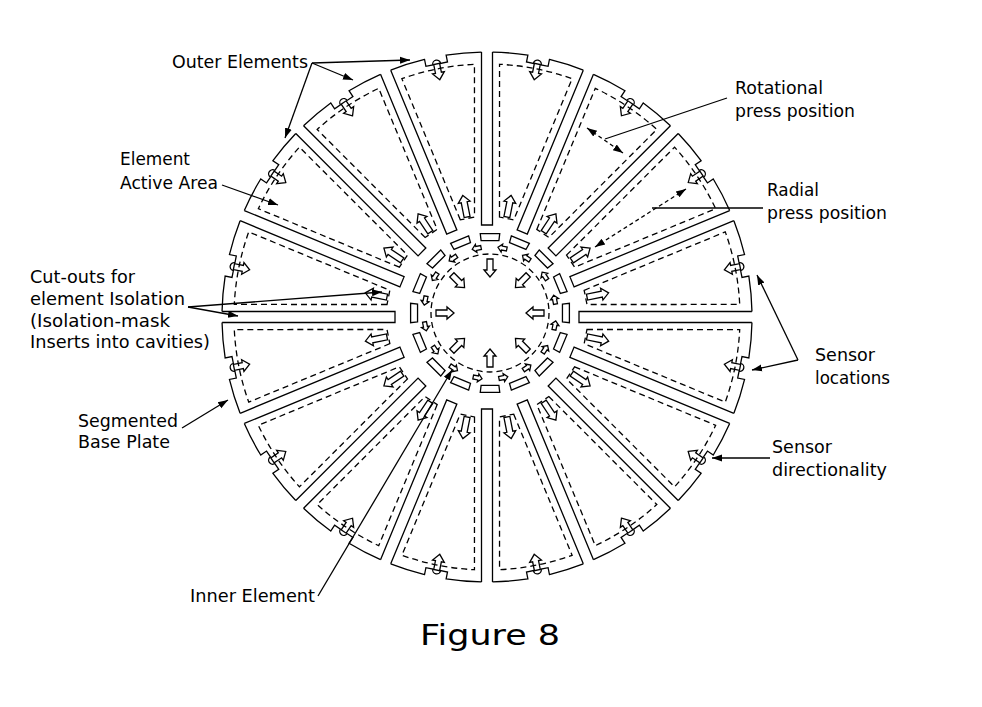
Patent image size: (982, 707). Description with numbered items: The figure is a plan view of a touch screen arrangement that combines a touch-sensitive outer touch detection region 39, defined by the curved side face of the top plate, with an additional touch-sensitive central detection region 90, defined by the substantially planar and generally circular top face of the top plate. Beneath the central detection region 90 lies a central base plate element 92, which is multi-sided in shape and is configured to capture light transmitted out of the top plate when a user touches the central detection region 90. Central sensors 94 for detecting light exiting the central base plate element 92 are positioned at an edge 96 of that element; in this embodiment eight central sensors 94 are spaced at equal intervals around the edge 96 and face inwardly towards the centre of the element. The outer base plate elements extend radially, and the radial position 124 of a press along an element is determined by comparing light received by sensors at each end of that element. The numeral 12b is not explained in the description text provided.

The outer touch detection region 39 is at (522, 113).
The segmented base plate 12b is at (588, 144).
The radial position 124 is at (669, 215).
The central sensor 94 is at (613, 191).
The central detection region 90 is at (602, 313).
The central base plate element 92 is at (490, 313).
The edge 96 is at (490, 313).